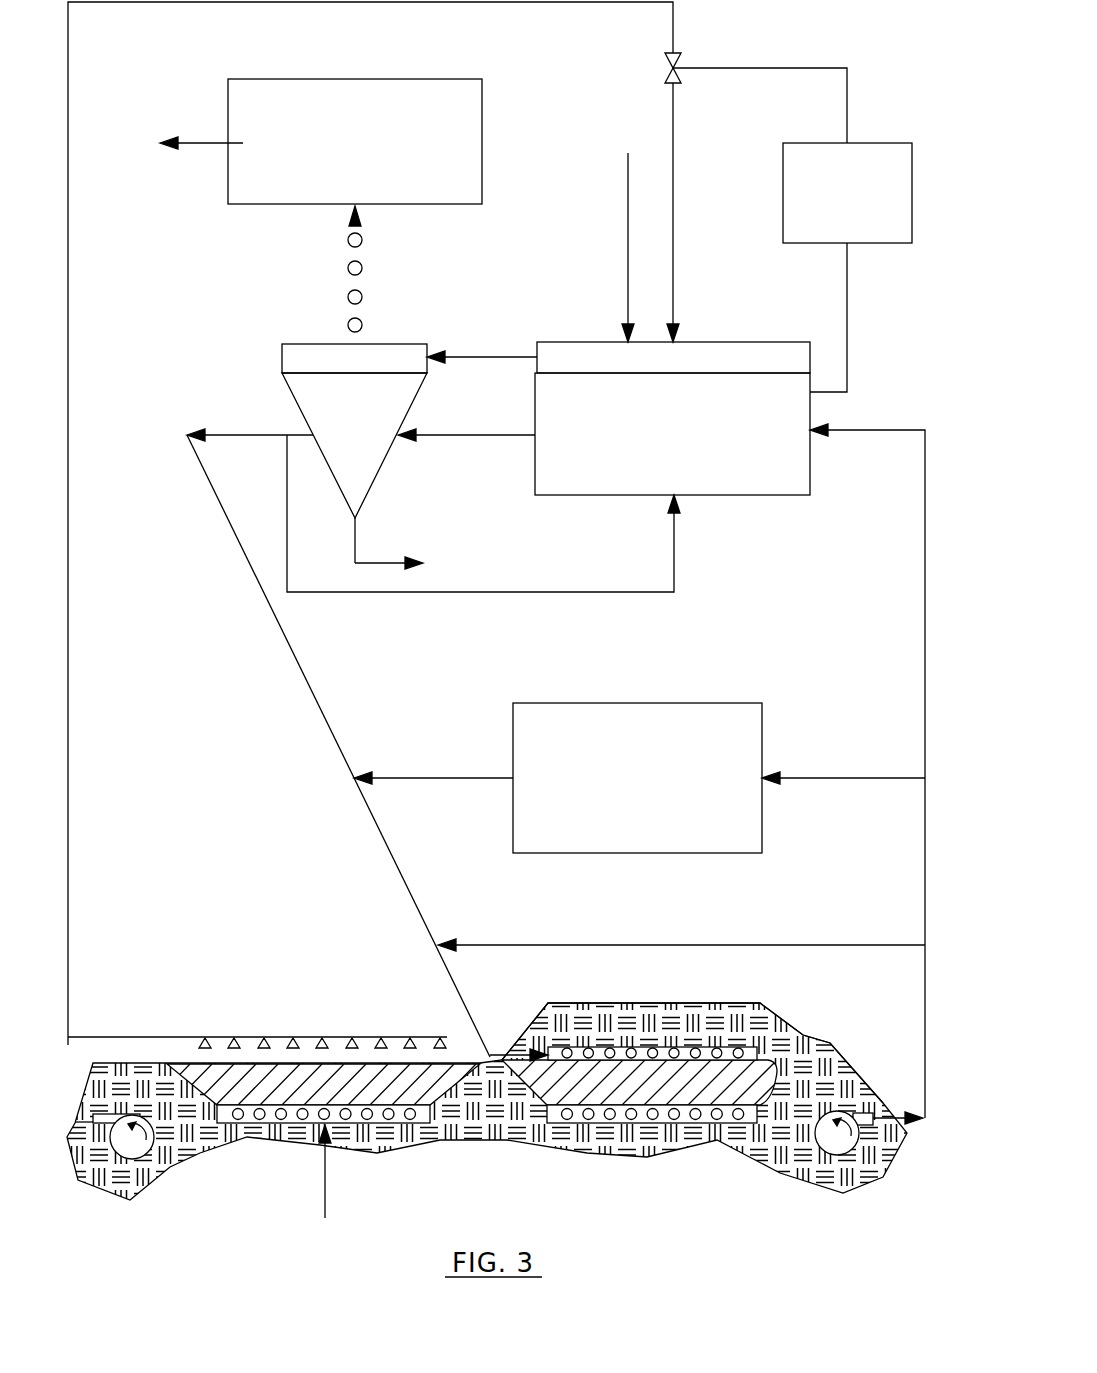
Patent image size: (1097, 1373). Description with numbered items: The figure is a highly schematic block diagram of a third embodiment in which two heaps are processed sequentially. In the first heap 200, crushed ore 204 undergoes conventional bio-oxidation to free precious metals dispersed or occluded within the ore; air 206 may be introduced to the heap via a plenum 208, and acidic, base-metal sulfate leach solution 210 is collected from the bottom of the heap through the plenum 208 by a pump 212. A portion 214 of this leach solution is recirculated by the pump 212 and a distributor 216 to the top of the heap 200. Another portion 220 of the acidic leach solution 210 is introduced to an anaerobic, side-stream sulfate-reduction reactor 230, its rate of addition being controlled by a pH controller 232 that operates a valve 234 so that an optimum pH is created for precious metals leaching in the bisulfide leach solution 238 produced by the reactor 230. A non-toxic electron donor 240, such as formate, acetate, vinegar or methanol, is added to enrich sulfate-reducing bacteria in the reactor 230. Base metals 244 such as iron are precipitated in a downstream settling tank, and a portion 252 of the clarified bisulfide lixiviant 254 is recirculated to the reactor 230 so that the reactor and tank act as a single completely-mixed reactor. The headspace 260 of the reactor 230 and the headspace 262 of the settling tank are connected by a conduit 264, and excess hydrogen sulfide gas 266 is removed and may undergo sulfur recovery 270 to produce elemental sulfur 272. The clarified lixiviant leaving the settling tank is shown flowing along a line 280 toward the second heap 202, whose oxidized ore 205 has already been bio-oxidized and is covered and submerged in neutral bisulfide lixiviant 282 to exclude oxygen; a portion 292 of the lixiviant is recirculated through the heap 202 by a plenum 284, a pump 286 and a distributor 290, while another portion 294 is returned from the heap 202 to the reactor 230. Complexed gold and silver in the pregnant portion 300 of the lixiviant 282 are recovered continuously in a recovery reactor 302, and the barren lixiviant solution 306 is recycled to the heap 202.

The heap 200 is at (190, 1100).
The second heap 202 is at (790, 1080).
The crushed ore 204 is at (353, 1083).
The oxidized ore 205 is at (630, 1083).
The air 206 is at (327, 1180).
The plenum 208 is at (392, 1125).
The acidic base-metal sulfate leach solution 210 is at (72, 1072).
The pump 212 is at (130, 1160).
The portion of leach solution 214 is at (200, 1037).
The distributor 216 is at (410, 1037).
The portion of leach solution 220 is at (68, 560).
The sulfate-reduction reactor 230 is at (760, 495).
The pH controller 232 is at (783, 195).
The valve 234 is at (682, 55).
The bisulfide leach solution 238 is at (455, 436).
The electron donor 240 is at (628, 240).
The base metals 244 is at (375, 563).
The portion of clarified bisulfide lixiviant 252 is at (385, 592).
The clarified bisulfide lixiviant 254 is at (300, 433).
The reactor headspace 260 is at (590, 342).
The settling tank headspace 262 is at (282, 345).
The conduit 264 is at (462, 357).
The excess hydrogen sulfide gas 266 is at (362, 300).
The sulfur recovery 270 is at (232, 204).
The elemental sulfur 272 is at (213, 143).
The leach solution feed line 280 is at (547, 1050).
The bisulfide lixiviant 282 is at (310, 688).
The plenum 284 is at (645, 1125).
The pump 286 is at (837, 1160).
The distributor 290 is at (648, 1050).
The recirculated portion of lixiviant 292 is at (685, 945).
The recirculated portion to reactor 294 is at (925, 595).
The pregnant portion of lixiviant 300 is at (870, 778).
The recovery reactor 302 is at (640, 703).
The barren lixiviant solution 306 is at (422, 778).